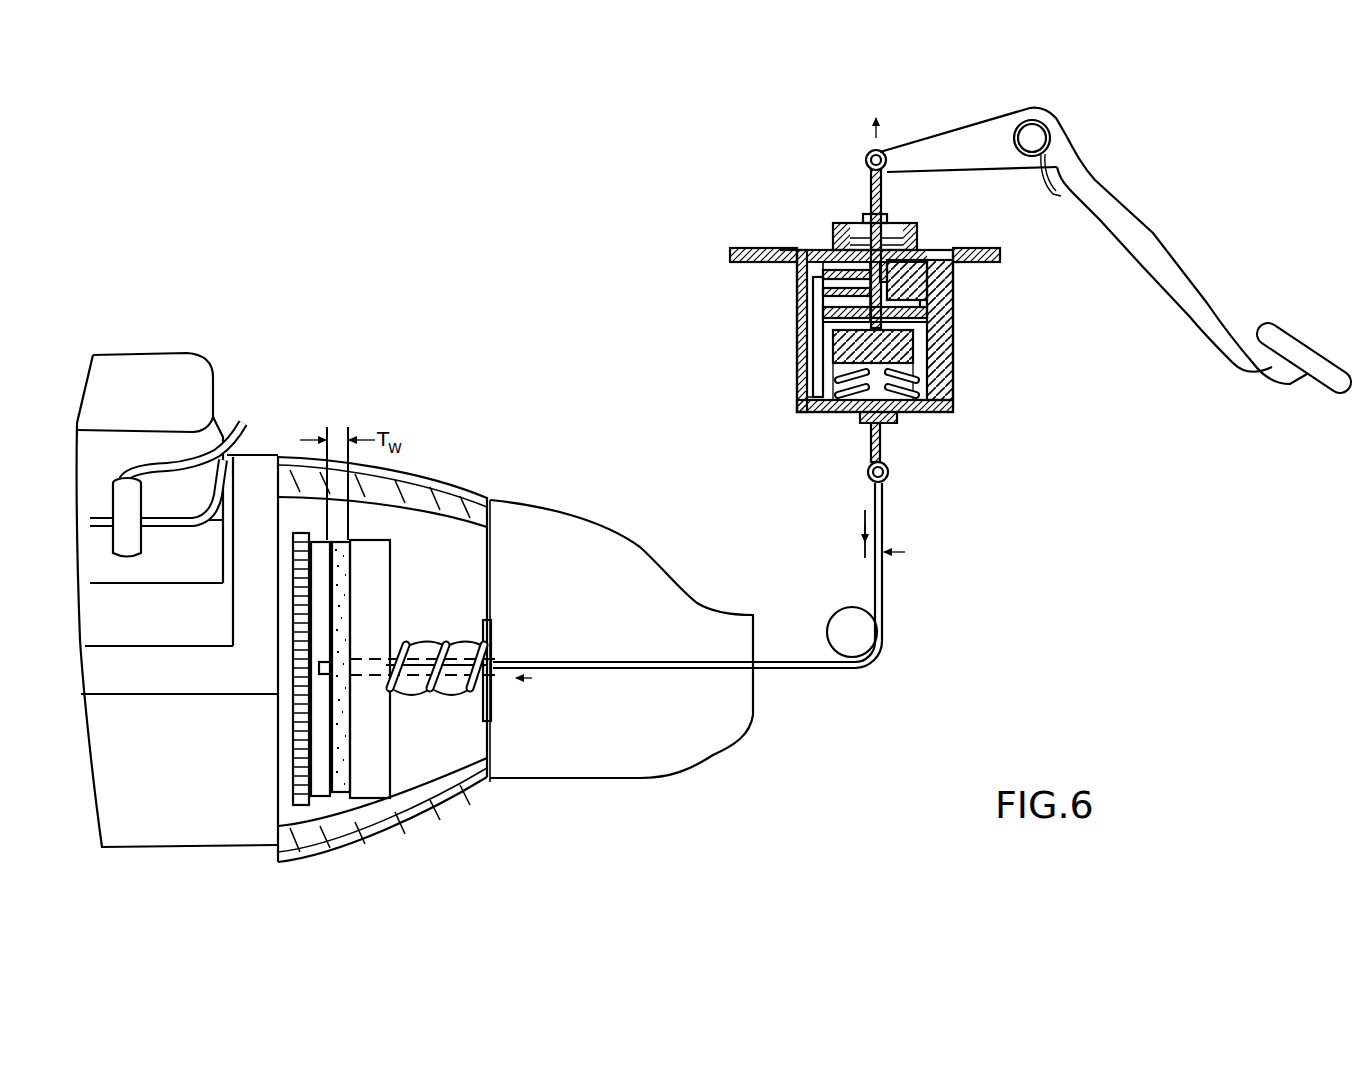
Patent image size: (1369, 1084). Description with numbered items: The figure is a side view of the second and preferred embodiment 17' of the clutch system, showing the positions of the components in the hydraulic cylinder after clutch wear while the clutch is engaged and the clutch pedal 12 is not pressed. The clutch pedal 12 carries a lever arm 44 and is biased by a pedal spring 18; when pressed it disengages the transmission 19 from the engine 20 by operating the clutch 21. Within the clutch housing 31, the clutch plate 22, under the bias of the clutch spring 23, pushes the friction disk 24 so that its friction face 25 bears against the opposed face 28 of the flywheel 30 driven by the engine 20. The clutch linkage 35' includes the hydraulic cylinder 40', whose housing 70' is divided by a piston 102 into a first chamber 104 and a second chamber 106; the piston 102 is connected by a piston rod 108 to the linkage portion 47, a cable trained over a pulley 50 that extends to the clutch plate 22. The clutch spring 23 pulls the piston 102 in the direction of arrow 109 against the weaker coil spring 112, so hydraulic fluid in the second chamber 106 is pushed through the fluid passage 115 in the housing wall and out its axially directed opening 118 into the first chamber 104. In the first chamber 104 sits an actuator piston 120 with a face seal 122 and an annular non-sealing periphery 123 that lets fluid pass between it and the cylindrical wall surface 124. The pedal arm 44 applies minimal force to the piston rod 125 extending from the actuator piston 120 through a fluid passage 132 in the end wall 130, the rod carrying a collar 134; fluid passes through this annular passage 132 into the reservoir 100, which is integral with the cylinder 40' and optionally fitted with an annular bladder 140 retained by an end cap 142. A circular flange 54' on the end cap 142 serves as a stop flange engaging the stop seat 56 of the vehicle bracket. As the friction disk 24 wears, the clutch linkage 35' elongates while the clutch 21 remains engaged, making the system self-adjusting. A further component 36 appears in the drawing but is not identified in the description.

The engine 20 is at (155, 385).
The hose 36 is at (295, 625).
The clutch spring 23 is at (490, 590).
The clutch housing 31 is at (470, 487).
The flywheel 30 is at (305, 530).
The opposed face 28 is at (330, 710).
The clutch plate 22 is at (383, 546).
The friction disk 24 is at (346, 796).
The friction face 25 is at (335, 765).
The transmission 19 is at (615, 525).
The clutch 21 is at (432, 743).
The linkage portion 47 is at (883, 592).
The clutch linkage 35' is at (934, 537).
The pulley 50 is at (849, 627).
The arrow 109 is at (866, 528).
The clutch system 17' is at (725, 511).
The second chamber 106 is at (927, 415).
The piston rod 108 is at (868, 444).
The hydraulic cylinder 40' is at (914, 342).
The piston 102 is at (953, 363).
The coil spring 112 is at (803, 417).
The fluid passage 115 is at (803, 369).
The cylindrical wall surface 124 is at (803, 388).
The first chamber 104 is at (847, 330).
The actuator piston 120 is at (957, 327).
The face seal 122 is at (817, 310).
The annular non-sealing periphery 123 is at (953, 307).
The housing 70' is at (943, 372).
The axially directed opening 118 is at (837, 298).
The collar 134 is at (797, 290).
The stop seat 56 is at (769, 261).
The circular flange 54' is at (753, 219).
The reservoir 100 is at (880, 250).
The annular bladder 140 is at (858, 222).
The piston rod 125 is at (864, 185).
The fluid passage 132 is at (925, 252).
The end cap 142 is at (939, 259).
The end wall 130 is at (950, 250).
The pedal spring 18 is at (1073, 160).
The lever arm 44 is at (1153, 228).
The clutch pedal 12 is at (1290, 323).